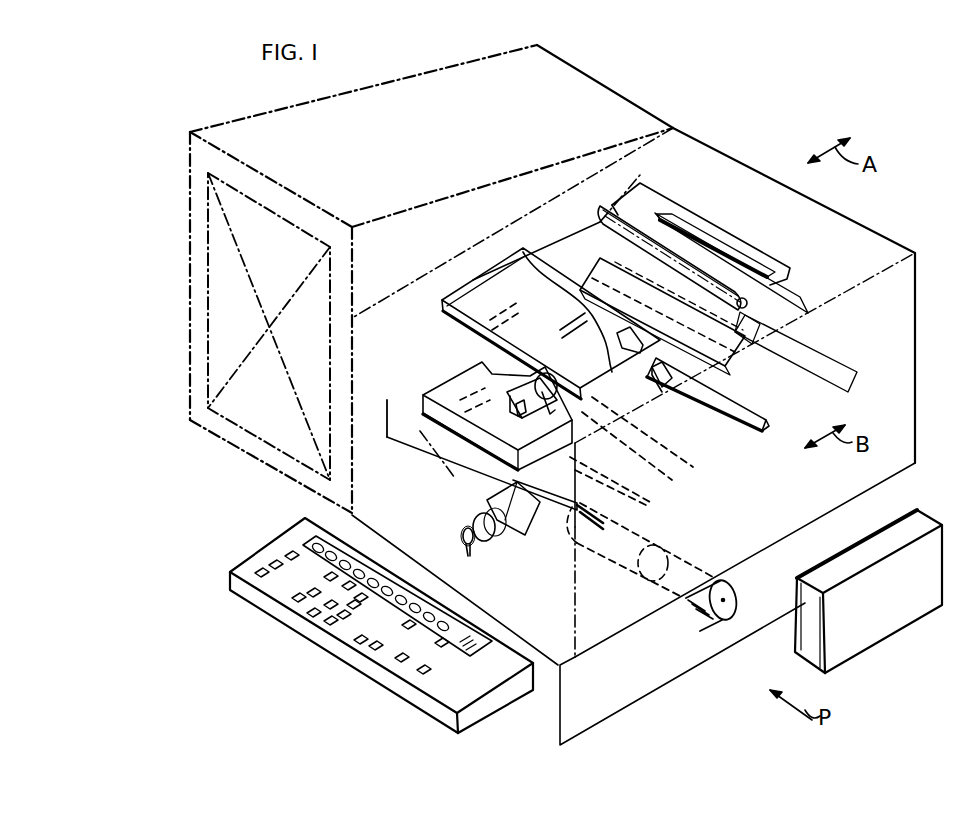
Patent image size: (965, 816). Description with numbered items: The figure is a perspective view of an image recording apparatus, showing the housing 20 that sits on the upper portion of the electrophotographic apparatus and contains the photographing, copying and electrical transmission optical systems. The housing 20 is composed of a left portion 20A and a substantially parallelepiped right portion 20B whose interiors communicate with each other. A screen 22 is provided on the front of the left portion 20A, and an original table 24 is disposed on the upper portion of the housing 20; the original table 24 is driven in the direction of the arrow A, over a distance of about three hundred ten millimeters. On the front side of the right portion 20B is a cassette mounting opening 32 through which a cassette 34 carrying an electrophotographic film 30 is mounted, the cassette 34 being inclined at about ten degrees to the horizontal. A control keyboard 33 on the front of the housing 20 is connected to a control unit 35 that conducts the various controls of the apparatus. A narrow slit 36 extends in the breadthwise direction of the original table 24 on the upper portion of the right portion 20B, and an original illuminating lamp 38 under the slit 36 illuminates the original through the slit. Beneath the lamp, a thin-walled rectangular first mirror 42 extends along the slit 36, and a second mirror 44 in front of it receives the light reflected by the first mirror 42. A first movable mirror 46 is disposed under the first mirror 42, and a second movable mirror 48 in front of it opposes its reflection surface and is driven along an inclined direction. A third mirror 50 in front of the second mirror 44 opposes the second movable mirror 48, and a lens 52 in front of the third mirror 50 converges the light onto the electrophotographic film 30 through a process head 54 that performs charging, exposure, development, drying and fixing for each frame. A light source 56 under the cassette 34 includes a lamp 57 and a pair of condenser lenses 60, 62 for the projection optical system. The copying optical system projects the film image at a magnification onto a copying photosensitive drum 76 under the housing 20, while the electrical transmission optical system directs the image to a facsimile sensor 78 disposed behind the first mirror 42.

The housing 20 is at (552, 395).
The left portion 20A is at (648, 102).
The right portion 20B is at (722, 150).
The screen 22 is at (227, 298).
The original table 24 is at (720, 232).
The electrophotographic film 30 is at (494, 370).
The cassette mounting opening 32 is at (437, 457).
The control keyboard 33 is at (506, 702).
The cassette 34 is at (420, 394).
The control unit 35 is at (905, 612).
The narrow slit 36 is at (616, 206).
The original illuminating lamp 38 is at (600, 226).
The first mirror 42 is at (610, 258).
The second mirror 44 is at (523, 250).
The first movable mirror 46 is at (756, 442).
The second movable mirror 48 is at (598, 527).
The third mirror 50 is at (628, 355).
The lens 52 is at (590, 407).
The process head 54 is at (530, 348).
The light source 56 is at (458, 541).
The lamp 57 is at (470, 550).
The condenser lens 60 is at (487, 541).
The condenser lens 62 is at (500, 536).
The copying photosensitive drum 76 is at (702, 610).
The facsimile sensor 78 is at (806, 298).